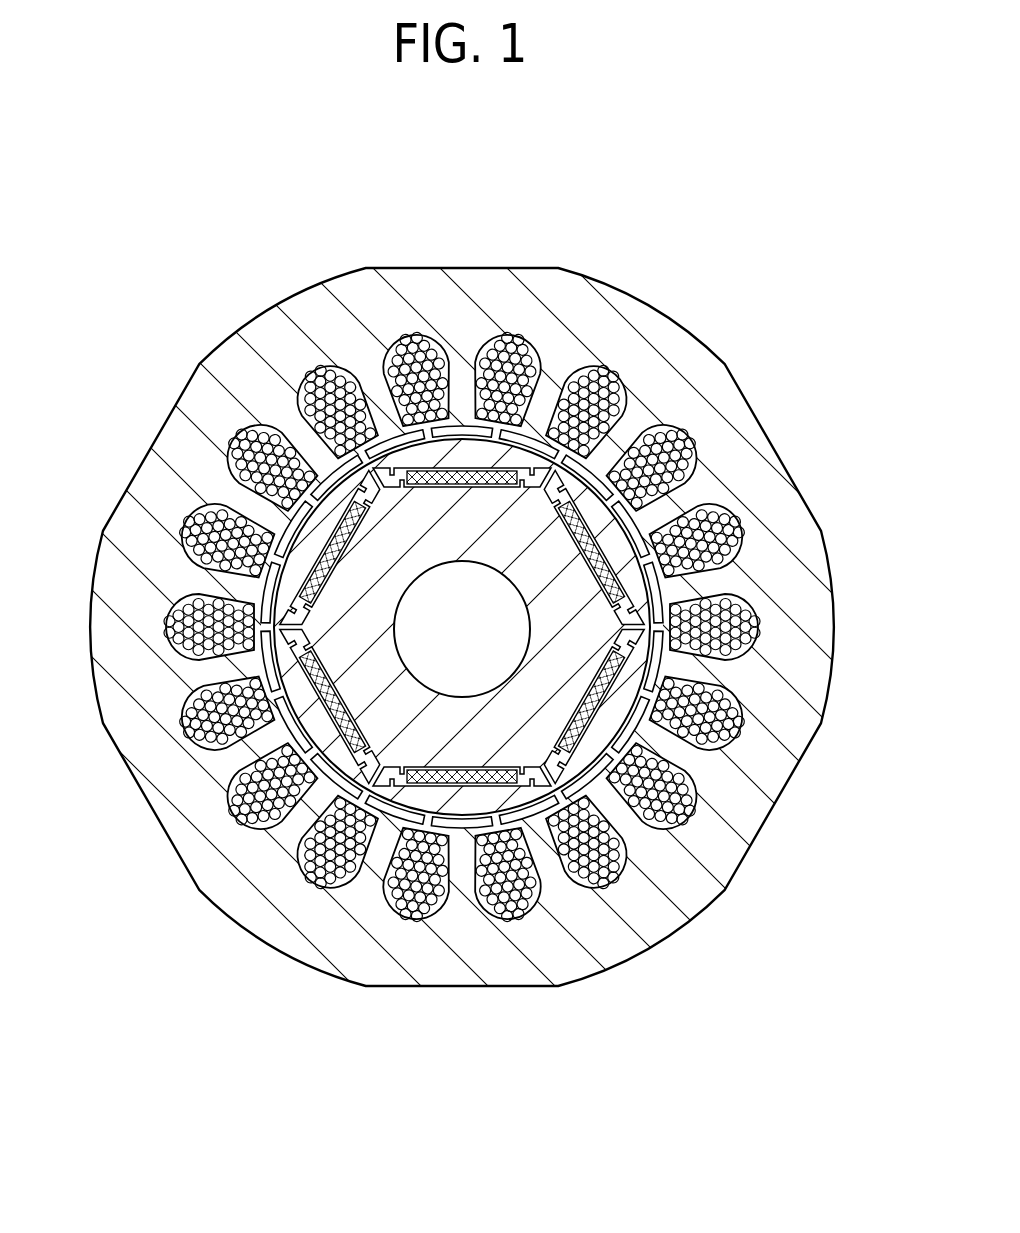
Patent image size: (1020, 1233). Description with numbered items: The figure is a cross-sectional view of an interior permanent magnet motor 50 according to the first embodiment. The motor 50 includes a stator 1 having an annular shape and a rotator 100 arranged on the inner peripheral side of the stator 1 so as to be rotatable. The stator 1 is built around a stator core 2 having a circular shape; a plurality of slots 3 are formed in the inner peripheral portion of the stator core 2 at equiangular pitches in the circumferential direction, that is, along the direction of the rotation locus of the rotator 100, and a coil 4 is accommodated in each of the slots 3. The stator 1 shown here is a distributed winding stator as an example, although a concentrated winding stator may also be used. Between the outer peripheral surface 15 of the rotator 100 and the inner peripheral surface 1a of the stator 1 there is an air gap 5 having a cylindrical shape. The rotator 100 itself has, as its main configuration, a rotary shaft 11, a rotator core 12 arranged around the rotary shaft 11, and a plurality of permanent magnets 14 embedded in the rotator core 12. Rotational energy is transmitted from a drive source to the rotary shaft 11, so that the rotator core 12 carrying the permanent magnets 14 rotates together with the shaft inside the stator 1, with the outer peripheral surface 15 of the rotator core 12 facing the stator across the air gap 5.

The interior permanent magnet motor 50 is at (119, 201).
The stator 1 is at (475, 283).
The inner peripheral surface 1a is at (522, 808).
The stator core 2 is at (636, 338).
The slots 3 is at (648, 418).
The coil 4 is at (732, 513).
The air gap 5 is at (658, 592).
The rotator 100 is at (407, 810).
The rotary shaft 11 is at (362, 777).
The rotator core 12 is at (610, 718).
The permanent magnets 14 is at (441, 638).
The outer peripheral surface 15 is at (523, 812).